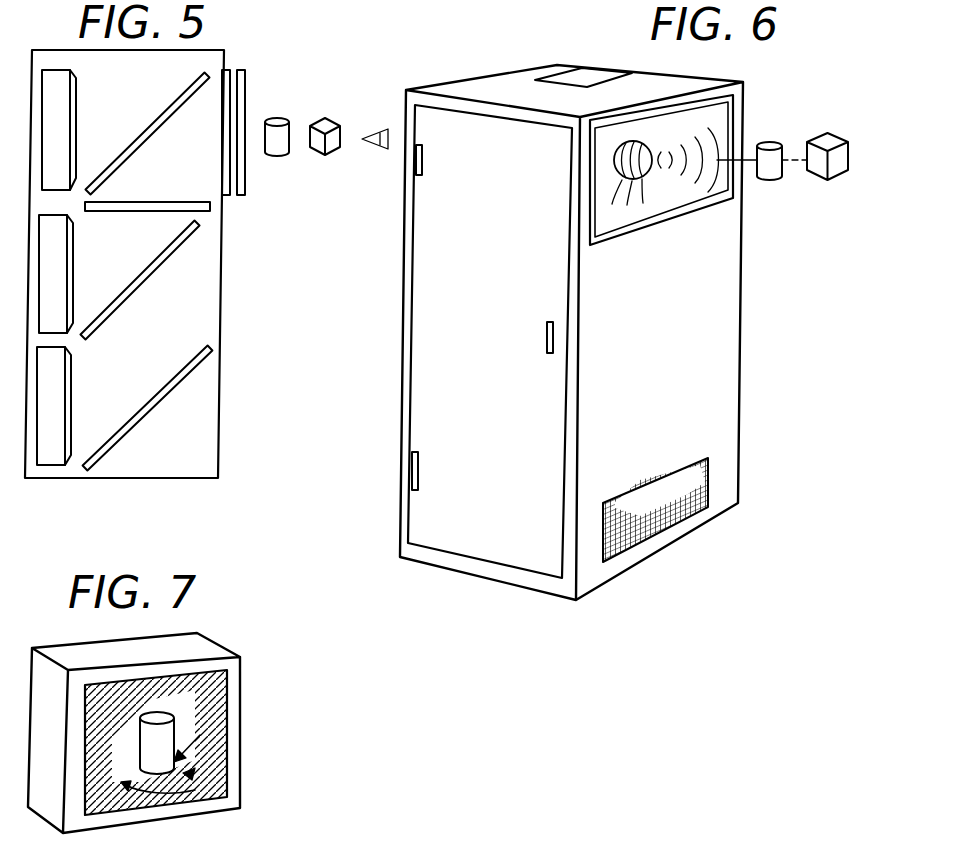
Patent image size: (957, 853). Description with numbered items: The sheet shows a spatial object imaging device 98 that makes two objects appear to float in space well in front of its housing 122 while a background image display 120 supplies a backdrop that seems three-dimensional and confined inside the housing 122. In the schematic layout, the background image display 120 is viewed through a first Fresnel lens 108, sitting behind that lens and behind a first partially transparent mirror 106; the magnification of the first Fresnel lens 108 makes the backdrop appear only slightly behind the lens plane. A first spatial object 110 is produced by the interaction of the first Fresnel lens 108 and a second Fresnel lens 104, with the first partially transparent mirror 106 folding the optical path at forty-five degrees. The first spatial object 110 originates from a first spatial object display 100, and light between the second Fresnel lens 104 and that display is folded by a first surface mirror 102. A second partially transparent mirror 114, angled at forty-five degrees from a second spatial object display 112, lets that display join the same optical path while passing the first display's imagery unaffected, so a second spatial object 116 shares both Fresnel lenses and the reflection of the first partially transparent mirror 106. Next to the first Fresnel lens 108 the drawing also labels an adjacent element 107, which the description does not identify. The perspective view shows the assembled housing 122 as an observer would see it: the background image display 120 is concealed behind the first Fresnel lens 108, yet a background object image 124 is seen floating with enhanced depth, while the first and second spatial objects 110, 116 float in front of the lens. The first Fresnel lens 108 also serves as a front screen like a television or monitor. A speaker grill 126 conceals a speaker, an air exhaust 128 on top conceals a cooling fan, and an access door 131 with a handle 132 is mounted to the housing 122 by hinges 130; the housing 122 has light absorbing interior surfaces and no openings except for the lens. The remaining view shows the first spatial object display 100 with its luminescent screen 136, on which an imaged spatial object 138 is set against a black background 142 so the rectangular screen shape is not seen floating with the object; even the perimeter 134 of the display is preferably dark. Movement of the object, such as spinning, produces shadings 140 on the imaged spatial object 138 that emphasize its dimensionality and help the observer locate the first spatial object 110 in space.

In FIG. 5, the spatial object imaging device 98 is at (216, 42).
In FIG. 6, the spatial object imaging device 98 is at (499, 60).
In FIG. 5, the first spatial object display 100 is at (73, 393).
In FIG. 5, the first surface mirror 102 is at (172, 392).
In FIG. 5, the second Fresnel lens 104 is at (128, 202).
In FIG. 5, the first partially transparent mirror 106 is at (182, 108).
In FIG. 5, the inner window panel 107 is at (245, 165).
In FIG. 6, the inner window panel 107 is at (690, 213).
In FIG. 5, the first Fresnel lens 108 is at (226, 190).
In FIG. 6, the first Fresnel lens 108 is at (688, 217).
In FIG. 5, the first spatial object 110 is at (280, 118).
In FIG. 6, the first spatial object 110 is at (768, 140).
In FIG. 5, the second spatial object display 112 is at (75, 270).
In FIG. 5, the second partially transparent mirror 114 is at (140, 283).
In FIG. 5, the second spatial object 116 is at (322, 118).
In FIG. 6, the second spatial object 116 is at (820, 133).
In FIG. 5, the background image display 120 is at (82, 105).
In FIG. 5, the housing 122 is at (222, 393).
In FIG. 6, the housing 122 is at (402, 318).
In FIG. 6, the background object image 124 is at (620, 172).
In FIG. 6, the speaker grill 126 is at (700, 487).
In FIG. 6, the air exhaust 128 is at (590, 85).
In FIG. 6, the hinges 130 is at (422, 160).
In FIG. 6, the access door 131 is at (421, 432).
In FIG. 6, the handle 132 is at (545, 335).
In FIG. 7, the perimeter 134 is at (97, 685).
In FIG. 7, the luminescent screen 136 is at (228, 778).
In FIG. 7, the imaged spatial object 138 is at (134, 727).
In FIG. 7, the shadings 140 is at (207, 725).
In FIG. 7, the black background 142 is at (215, 752).